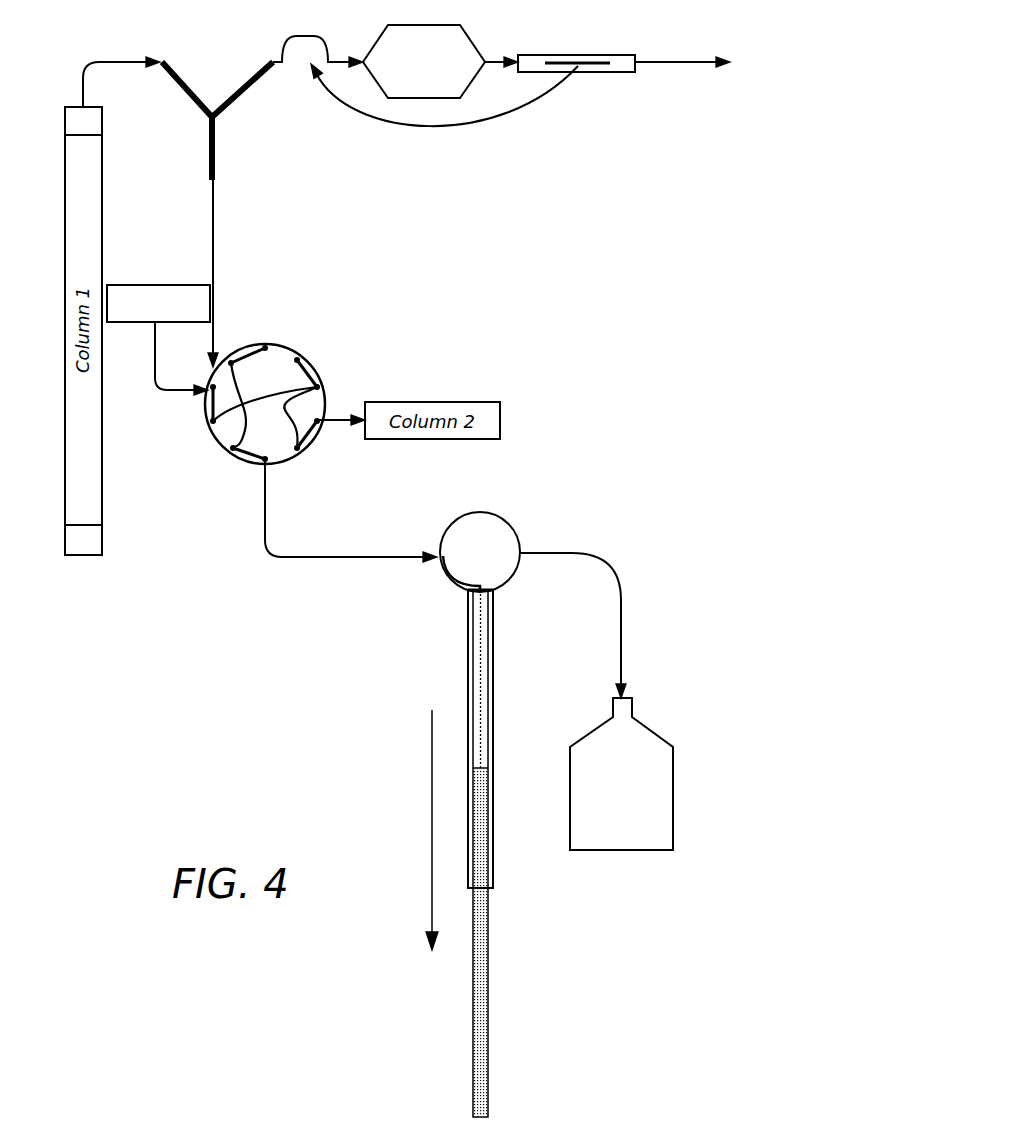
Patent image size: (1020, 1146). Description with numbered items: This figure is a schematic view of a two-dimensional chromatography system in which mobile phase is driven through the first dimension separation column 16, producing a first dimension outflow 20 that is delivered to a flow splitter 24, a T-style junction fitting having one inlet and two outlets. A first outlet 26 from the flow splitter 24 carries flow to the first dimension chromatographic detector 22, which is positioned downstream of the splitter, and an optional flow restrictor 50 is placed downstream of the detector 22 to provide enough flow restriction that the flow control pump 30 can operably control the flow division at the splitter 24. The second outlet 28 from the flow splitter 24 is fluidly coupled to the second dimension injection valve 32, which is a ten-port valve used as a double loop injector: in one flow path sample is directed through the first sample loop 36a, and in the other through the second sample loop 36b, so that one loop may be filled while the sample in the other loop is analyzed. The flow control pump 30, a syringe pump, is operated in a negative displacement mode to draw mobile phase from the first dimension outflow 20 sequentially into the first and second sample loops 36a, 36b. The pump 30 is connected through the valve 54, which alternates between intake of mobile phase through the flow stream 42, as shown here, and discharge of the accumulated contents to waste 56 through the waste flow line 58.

The first dimension separation column 16 is at (103, 278).
The first dimension outflow 20 is at (98, 62).
The first dimension chromatographic detector 22 is at (445, 25).
The flow splitter 24 is at (196, 126).
The first outlet 26 is at (266, 62).
The second outlet 28 is at (214, 248).
The flow control pump 30 is at (496, 722).
The second dimension injection valve 32 is at (263, 329).
The first sample loop 36a is at (222, 434).
The second sample loop 36b is at (302, 408).
The flow stream 42 is at (302, 556).
The flow restrictor 50 is at (583, 72).
The valve 54 is at (518, 538).
The waste 56 is at (674, 755).
The waste flow line 58 is at (624, 597).